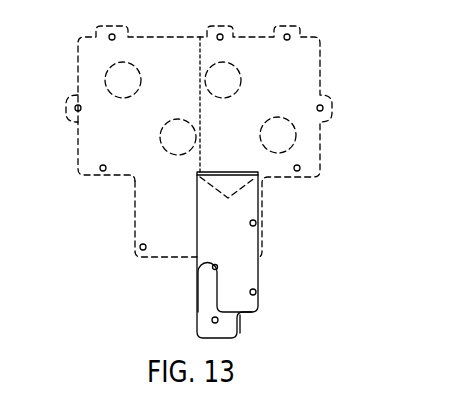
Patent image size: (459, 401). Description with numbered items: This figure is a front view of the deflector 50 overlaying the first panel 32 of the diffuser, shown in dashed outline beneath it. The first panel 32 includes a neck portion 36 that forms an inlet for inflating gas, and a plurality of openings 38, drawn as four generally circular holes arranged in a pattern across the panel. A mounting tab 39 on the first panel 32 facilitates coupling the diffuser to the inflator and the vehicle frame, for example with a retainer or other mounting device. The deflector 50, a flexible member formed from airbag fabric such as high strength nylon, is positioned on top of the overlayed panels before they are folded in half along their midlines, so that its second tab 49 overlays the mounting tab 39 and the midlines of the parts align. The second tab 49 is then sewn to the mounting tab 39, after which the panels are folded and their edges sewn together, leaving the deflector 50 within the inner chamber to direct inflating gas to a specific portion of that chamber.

The first panel 32 is at (340, 129).
The neck portion 36 is at (148, 208).
The openings 38 is at (107, 80).
The mounting tab 39 is at (203, 68).
The second tab 49 is at (205, 298).
The deflector 50 is at (267, 263).